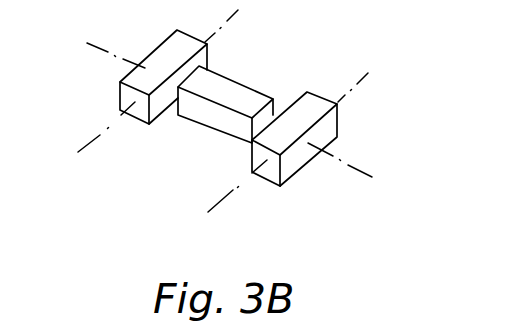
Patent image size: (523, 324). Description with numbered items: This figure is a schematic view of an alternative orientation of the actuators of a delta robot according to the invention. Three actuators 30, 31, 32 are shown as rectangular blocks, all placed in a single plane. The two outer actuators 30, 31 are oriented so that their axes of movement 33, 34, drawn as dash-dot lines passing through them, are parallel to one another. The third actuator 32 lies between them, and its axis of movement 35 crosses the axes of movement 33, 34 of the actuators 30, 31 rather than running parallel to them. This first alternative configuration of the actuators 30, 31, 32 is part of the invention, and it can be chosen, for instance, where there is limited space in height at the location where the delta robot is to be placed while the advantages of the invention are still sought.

The actuator 30 is at (120, 94).
The actuator 31 is at (293, 163).
The actuator 32 is at (233, 93).
The axis of movement 33 is at (88, 143).
The axis of movement 34 is at (214, 207).
The axis of movement 35 is at (354, 163).